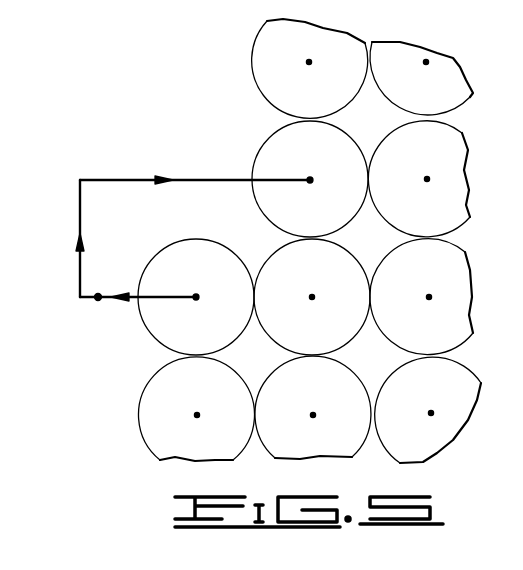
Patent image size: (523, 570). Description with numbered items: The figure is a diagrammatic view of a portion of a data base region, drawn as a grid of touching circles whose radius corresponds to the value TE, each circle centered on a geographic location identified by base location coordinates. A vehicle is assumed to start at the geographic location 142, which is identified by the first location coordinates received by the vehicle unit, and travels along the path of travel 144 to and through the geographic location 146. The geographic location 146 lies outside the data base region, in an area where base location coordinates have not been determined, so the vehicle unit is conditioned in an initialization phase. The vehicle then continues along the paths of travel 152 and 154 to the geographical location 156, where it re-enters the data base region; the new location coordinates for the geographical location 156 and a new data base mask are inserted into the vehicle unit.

The geographic location 142 is at (199, 300).
The path of travel 144 is at (153, 296).
The geographic location 146 is at (95, 302).
The path of travel 152 is at (80, 198).
The path of travel 154 is at (114, 179).
The geographical location 156 is at (330, 154).